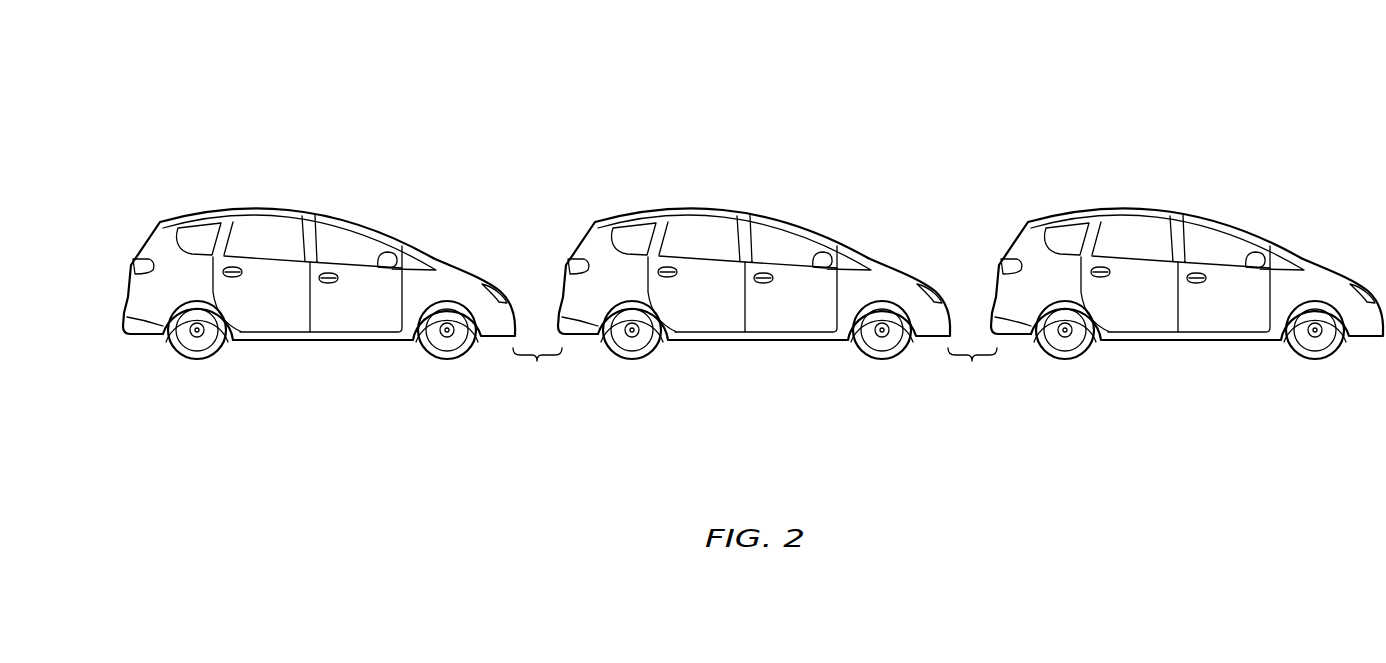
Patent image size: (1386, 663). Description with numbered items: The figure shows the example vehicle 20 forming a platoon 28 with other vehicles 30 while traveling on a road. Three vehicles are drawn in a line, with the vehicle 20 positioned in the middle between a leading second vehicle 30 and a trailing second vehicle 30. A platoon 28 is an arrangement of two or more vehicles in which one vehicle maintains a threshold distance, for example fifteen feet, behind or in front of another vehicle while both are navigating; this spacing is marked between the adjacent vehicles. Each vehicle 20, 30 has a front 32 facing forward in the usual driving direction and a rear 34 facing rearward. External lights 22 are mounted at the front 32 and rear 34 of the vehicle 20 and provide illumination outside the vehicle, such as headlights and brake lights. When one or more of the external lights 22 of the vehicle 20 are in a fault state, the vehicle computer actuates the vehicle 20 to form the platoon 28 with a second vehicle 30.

The vehicle 20 is at (756, 263).
The external lights 22 is at (131, 262).
The platoon 28 is at (734, 217).
The second vehicle 30 is at (281, 211).
The front 32 is at (466, 272).
The rear 34 is at (129, 290).